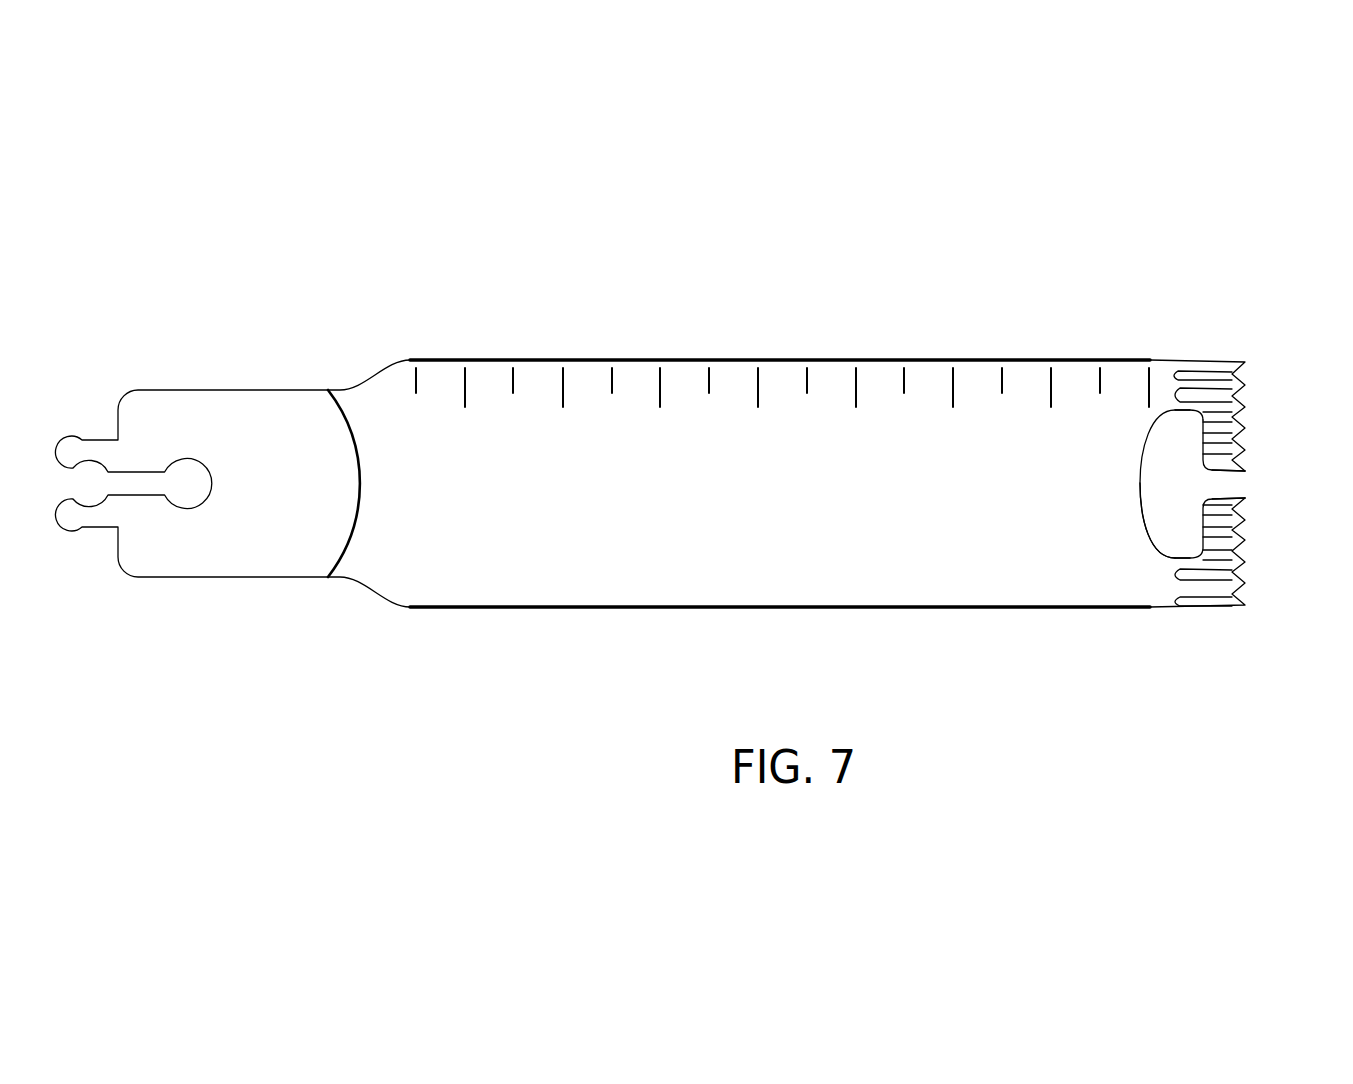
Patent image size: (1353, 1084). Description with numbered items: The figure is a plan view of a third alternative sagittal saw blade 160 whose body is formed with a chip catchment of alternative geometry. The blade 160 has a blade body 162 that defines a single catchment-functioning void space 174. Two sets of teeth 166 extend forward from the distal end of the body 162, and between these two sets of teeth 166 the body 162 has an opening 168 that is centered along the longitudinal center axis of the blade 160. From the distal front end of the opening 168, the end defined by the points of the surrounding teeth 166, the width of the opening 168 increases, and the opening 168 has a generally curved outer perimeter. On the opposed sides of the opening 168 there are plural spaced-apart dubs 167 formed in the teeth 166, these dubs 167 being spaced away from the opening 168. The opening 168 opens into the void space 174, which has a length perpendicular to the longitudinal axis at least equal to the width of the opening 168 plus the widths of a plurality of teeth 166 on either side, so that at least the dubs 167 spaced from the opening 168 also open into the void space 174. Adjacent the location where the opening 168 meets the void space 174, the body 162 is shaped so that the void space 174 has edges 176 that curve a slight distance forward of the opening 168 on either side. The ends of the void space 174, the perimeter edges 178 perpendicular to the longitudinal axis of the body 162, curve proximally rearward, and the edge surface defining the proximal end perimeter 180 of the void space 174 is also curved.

The blade 160 is at (493, 300).
The blade body 162 is at (577, 553).
The teeth 166 is at (1240, 418).
The dubs 167 is at (1223, 412).
The opening 168 is at (1228, 483).
The void space 174 is at (1160, 463).
The edges 176 is at (1238, 437).
The perimeter edges 178 is at (1192, 410).
The proximal end perimeter 180 is at (1143, 516).